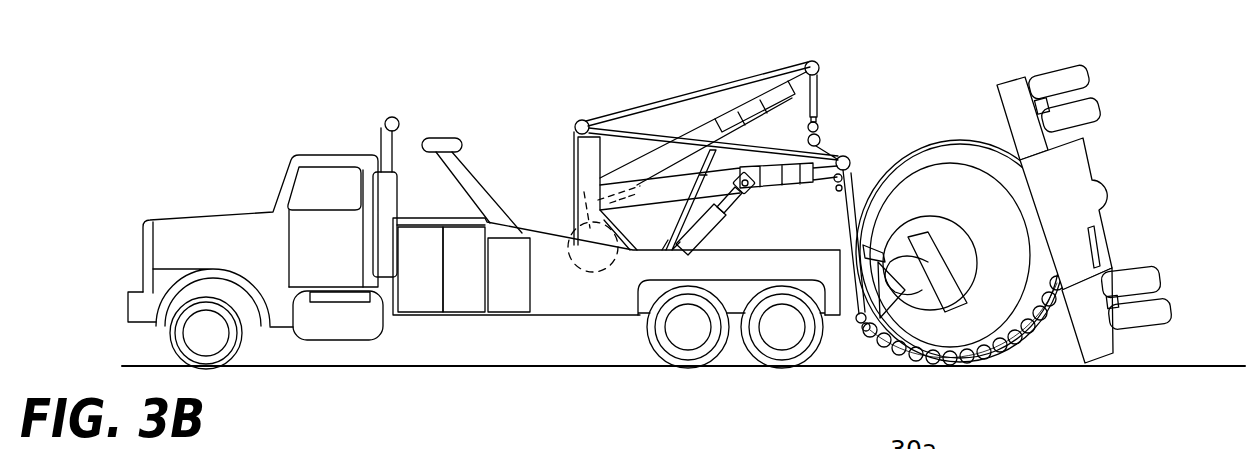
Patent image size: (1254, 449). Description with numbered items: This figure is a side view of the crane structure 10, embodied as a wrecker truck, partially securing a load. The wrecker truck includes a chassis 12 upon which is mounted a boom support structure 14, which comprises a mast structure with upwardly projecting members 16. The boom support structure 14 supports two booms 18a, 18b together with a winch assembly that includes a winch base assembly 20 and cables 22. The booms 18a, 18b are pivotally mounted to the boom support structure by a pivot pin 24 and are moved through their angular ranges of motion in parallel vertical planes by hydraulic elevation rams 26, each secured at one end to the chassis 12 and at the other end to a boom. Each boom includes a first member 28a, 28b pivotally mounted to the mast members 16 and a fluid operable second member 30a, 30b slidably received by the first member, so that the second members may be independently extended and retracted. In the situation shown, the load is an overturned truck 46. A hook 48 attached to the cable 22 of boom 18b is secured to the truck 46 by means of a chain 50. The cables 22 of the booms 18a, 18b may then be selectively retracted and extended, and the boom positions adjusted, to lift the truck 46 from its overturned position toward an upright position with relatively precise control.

The crane structure 10 is at (490, 85).
The chassis 12 is at (575, 318).
The boom support structure 14 is at (558, 138).
The upwardly projecting members 16 is at (586, 160).
The boom 18a is at (741, 88).
The boom 18b is at (795, 210).
The winch base assembly 20 is at (578, 265).
The cables 22 is at (622, 115).
The pivot pin 24 is at (584, 200).
The hydraulic elevation rams 26 is at (700, 245).
The first member 28a is at (697, 128).
The first member 28b is at (650, 198).
The second member 30a is at (808, 61).
The second member 30b is at (850, 157).
The overturned truck 46 is at (1115, 243).
The hook 48 is at (860, 325).
The chain 50 is at (1030, 345).